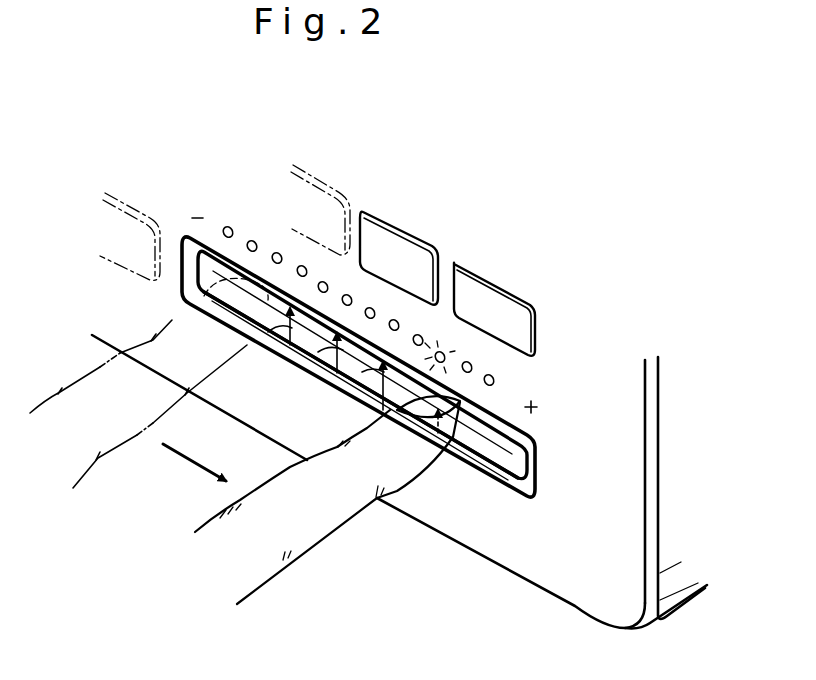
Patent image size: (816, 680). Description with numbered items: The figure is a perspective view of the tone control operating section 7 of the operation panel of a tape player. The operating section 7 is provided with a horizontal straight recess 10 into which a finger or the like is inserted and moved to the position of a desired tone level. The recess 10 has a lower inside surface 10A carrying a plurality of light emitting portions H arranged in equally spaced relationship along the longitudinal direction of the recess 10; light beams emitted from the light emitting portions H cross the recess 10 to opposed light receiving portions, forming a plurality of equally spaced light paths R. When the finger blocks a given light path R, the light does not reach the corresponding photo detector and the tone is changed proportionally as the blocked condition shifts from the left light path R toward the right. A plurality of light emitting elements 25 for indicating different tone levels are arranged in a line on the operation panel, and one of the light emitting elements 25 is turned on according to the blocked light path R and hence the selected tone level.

The tone control operating section 7 is at (472, 487).
The horizontal straight recess 10 is at (522, 442).
The lower inside surface 10A is at (522, 475).
The light emitting elements 25 is at (372, 311).
The light paths R is at (270, 323).
The light emitting portions H is at (263, 350).